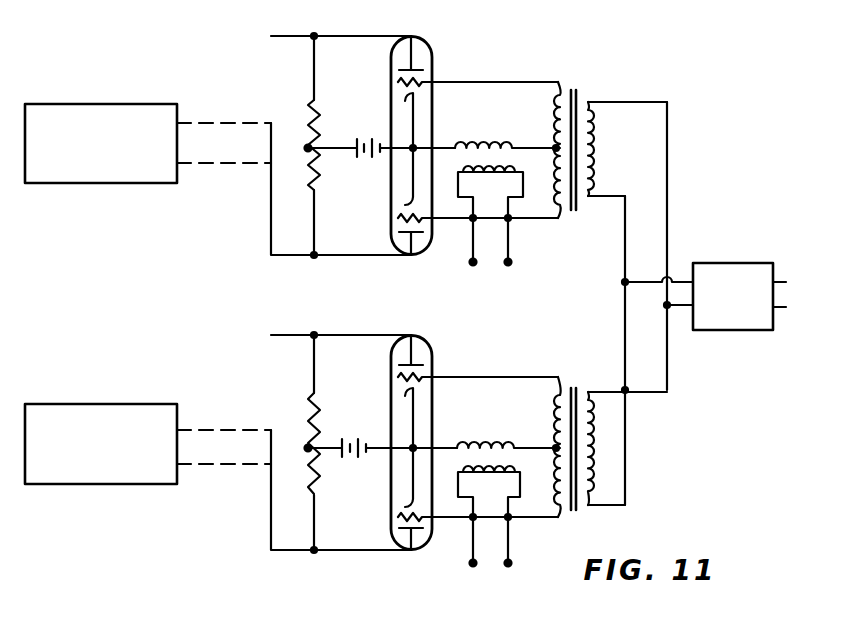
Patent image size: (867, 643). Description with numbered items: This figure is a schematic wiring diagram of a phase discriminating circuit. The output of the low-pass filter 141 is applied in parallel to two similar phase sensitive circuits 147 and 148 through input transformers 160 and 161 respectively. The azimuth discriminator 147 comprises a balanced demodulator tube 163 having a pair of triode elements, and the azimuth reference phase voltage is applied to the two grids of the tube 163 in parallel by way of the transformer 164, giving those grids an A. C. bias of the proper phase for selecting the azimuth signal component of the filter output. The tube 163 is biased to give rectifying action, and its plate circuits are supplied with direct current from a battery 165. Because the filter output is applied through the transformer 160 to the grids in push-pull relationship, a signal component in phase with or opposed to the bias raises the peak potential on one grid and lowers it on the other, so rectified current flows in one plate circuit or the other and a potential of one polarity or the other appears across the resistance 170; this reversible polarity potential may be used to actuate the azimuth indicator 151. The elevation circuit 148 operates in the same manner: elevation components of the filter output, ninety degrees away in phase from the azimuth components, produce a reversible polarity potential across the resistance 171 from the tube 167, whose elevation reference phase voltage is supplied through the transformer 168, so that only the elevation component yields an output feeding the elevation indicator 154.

The phase sensitive circuit 147 is at (193, 19).
The phase sensitive circuit 148 is at (193, 579).
The azimuth indicator 151 is at (96, 104).
The elevation indicator 154 is at (97, 404).
The resistance 170 is at (304, 140).
The resistance 171 is at (304, 460).
The battery 165 is at (369, 158).
The balanced demodulator tube 163 is at (432, 49).
The tube 167 is at (432, 346).
The transformer 164 is at (472, 145).
The transformer 168 is at (472, 445).
The input transformer 160 is at (575, 104).
The input transformer 161 is at (572, 392).
The low-pass filter 141 is at (705, 263).